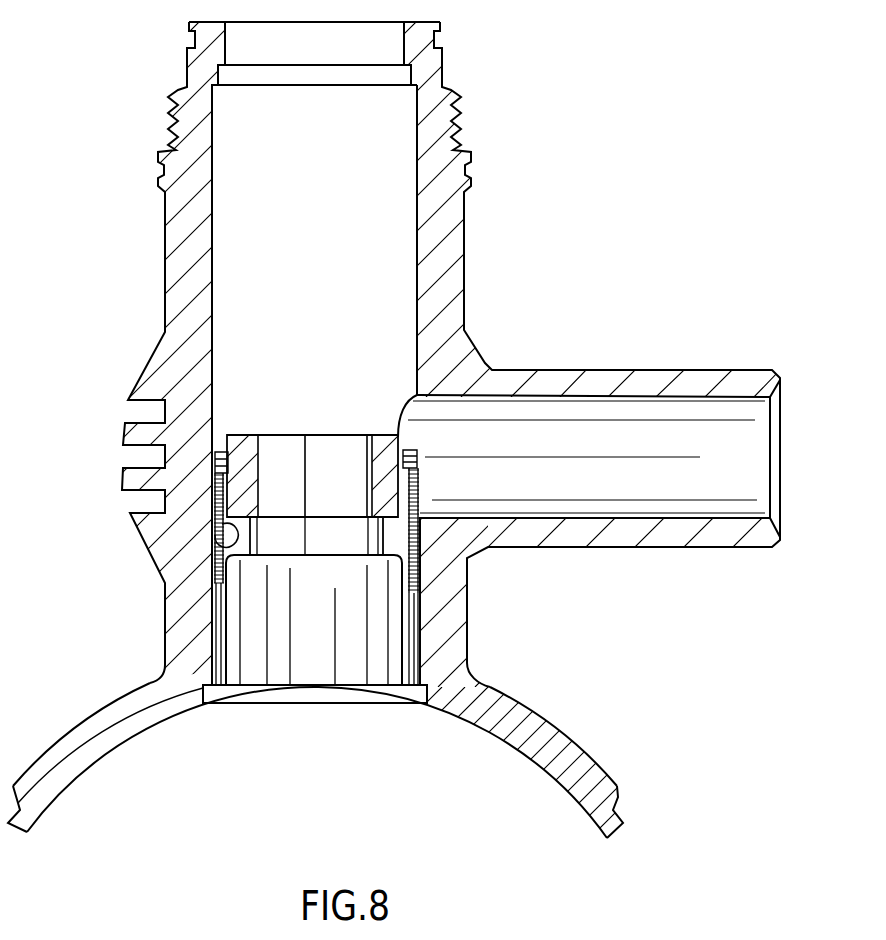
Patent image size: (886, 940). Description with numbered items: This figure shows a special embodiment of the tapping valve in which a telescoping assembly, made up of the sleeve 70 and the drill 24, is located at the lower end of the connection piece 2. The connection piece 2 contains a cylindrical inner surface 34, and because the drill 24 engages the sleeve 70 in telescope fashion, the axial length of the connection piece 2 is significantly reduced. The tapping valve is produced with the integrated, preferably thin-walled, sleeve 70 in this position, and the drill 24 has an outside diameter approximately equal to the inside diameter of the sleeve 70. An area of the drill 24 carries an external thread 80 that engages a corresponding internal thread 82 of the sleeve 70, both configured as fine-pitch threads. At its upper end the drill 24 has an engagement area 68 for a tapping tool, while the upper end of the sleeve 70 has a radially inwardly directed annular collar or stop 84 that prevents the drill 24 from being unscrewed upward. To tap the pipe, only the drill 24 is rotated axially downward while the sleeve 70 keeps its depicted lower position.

The connection piece 2 is at (437, 203).
The cylindrical inner surface 34 is at (428, 283).
The engagement area 68 is at (283, 465).
The sleeve 70 is at (215, 494).
The internal thread 82 is at (222, 524).
The annular collar or stop 84 is at (409, 468).
The external thread 80 is at (402, 563).
The drill 24 is at (407, 641).